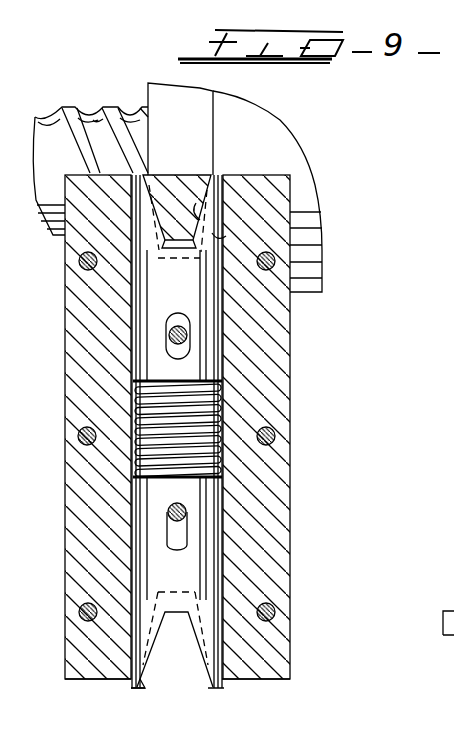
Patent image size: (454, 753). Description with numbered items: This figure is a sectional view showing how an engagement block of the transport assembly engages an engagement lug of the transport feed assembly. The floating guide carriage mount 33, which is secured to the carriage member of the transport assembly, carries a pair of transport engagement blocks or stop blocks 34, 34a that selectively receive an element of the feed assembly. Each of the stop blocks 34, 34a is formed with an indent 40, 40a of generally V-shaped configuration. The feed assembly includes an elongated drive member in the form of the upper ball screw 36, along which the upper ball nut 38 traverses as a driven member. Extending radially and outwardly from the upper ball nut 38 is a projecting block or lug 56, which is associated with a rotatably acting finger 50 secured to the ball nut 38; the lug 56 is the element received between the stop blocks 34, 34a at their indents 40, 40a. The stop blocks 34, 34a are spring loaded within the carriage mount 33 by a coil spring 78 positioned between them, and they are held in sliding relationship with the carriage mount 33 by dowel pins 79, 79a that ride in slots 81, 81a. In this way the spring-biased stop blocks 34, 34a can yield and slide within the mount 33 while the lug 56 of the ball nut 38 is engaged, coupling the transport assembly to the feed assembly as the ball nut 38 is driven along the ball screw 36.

The floating guide carriage mount 33 is at (265, 366).
The stop block 34 is at (212, 233).
The stop block 34a is at (205, 612).
The upper ball screw 36 is at (70, 120).
The upper ball nut 38 is at (258, 141).
The indent 40 is at (196, 203).
The indent 40a is at (152, 668).
The rotatably acting finger 50 is at (195, 113).
The lug 56 is at (205, 173).
The coil spring 78 is at (222, 418).
The dowel pin 79 is at (186, 333).
The dowel pin 79a is at (185, 508).
The slot 81 is at (188, 320).
The slot 81a is at (188, 530).